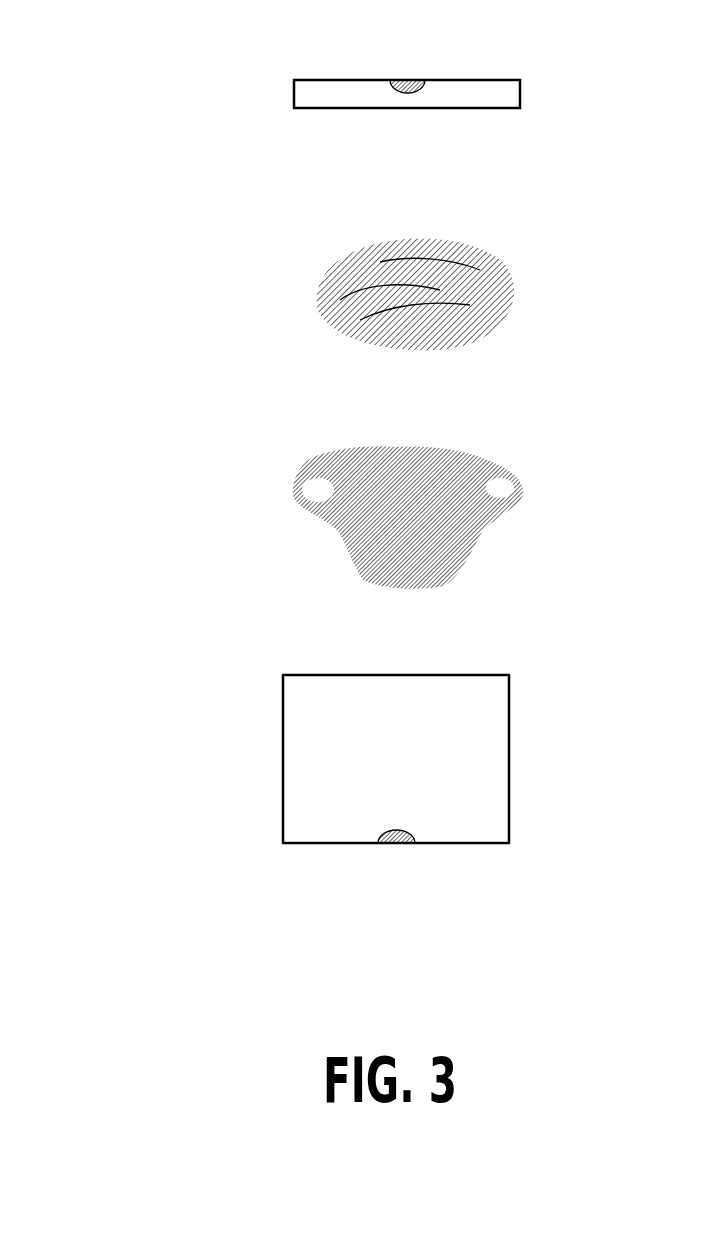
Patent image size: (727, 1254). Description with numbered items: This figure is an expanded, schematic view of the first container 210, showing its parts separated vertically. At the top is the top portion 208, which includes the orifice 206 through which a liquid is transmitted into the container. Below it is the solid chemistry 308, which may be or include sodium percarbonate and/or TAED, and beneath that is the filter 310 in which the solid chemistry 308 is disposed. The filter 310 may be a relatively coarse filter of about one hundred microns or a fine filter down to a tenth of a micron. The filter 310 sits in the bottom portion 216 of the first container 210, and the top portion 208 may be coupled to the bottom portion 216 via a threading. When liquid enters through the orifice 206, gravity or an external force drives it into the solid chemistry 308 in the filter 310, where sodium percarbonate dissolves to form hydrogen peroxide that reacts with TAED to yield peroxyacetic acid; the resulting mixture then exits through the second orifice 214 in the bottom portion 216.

The first container 210 is at (160, 28).
The orifice 206 is at (403, 79).
The top portion 208 is at (524, 87).
The solid chemistry 308 is at (504, 254).
The filter 310 is at (504, 467).
The second orifice 214 is at (384, 850).
The bottom portion 216 is at (502, 836).